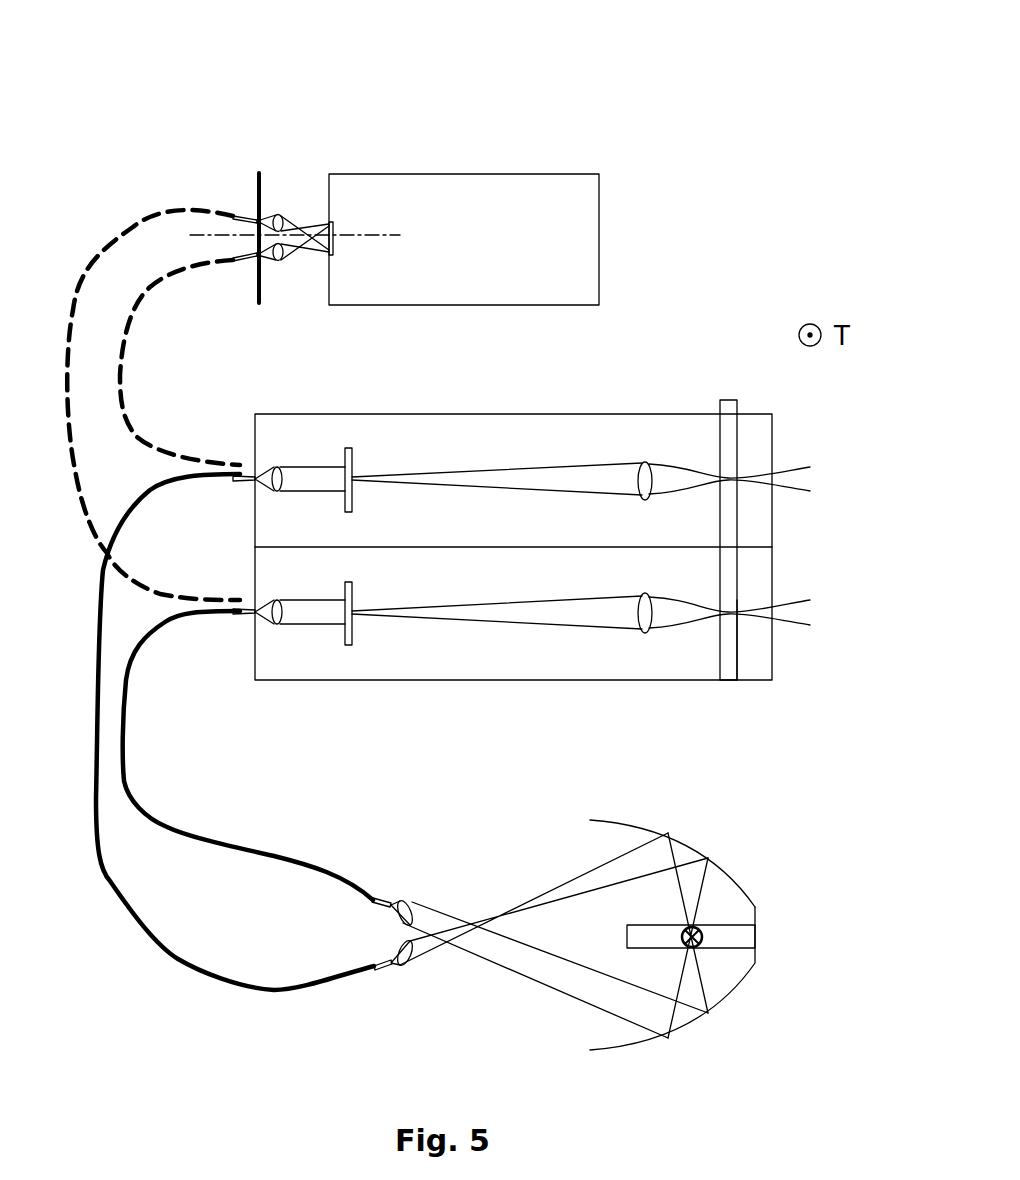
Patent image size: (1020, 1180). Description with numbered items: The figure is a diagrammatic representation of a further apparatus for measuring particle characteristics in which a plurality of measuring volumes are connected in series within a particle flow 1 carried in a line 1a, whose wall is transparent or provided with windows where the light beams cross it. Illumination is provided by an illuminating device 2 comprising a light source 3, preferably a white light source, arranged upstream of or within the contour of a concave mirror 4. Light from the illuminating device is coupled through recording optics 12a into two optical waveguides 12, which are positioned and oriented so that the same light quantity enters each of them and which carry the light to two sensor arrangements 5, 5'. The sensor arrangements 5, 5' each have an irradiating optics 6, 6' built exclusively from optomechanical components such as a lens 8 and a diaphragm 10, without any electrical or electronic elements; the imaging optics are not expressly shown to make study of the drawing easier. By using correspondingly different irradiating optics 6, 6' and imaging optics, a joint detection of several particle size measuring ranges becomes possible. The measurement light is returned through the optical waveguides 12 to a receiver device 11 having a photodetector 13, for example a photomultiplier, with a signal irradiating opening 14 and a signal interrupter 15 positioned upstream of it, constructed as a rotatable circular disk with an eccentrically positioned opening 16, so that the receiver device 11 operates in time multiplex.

The particle flow 1 is at (727, 445).
The line 1a is at (740, 663).
The illuminating device 2 is at (650, 961).
The light source 3 is at (704, 935).
The concave mirror 4 is at (600, 820).
The sensor arrangement 5 is at (513, 531).
The sensor arrangement 5' is at (513, 661).
The irradiating optics 6 is at (521, 412).
The irradiating optics 6' is at (521, 690).
The lens 8 is at (633, 590).
The diaphragm 10 is at (358, 462).
The receiver device 11 is at (522, 148).
The optical waveguide 12 is at (150, 277).
The recording optics 12a is at (374, 909).
The photodetector 13 is at (599, 216).
The signal irradiating opening 14 is at (335, 234).
The signal interrupter 15 is at (263, 193).
The eccentrically positioned opening 16 is at (253, 215).